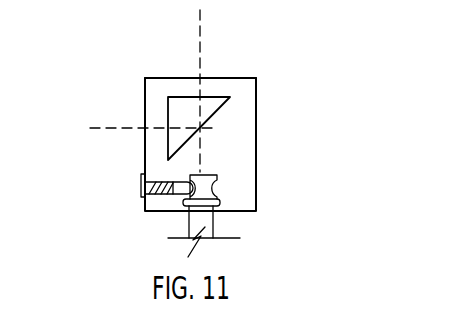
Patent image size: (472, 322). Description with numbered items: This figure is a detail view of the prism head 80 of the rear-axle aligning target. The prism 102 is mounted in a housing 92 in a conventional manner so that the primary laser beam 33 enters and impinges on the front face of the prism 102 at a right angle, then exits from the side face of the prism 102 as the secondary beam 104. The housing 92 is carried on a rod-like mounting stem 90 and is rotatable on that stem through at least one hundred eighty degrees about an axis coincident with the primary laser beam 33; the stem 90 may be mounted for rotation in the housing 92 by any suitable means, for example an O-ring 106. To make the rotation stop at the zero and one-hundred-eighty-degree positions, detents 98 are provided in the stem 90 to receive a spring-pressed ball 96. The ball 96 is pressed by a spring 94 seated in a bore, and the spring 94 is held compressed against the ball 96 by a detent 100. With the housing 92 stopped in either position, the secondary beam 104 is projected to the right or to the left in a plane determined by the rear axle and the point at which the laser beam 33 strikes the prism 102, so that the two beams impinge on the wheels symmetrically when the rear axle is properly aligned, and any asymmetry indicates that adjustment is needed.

The primary laser beam 33 is at (184, 36).
The prism head 80 is at (240, 70).
The mounting stem 90 is at (213, 223).
The housing 92 is at (256, 197).
The spring 94 is at (146, 198).
The spring-pressed ball 96 is at (172, 192).
The detents 98 is at (214, 186).
The detent 100 is at (112, 238).
The prism 102 is at (193, 135).
The secondary beam 104 is at (106, 109).
The O-ring 106 is at (183, 190).